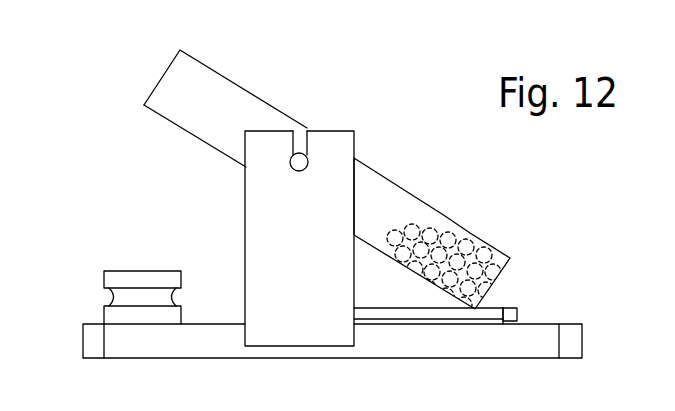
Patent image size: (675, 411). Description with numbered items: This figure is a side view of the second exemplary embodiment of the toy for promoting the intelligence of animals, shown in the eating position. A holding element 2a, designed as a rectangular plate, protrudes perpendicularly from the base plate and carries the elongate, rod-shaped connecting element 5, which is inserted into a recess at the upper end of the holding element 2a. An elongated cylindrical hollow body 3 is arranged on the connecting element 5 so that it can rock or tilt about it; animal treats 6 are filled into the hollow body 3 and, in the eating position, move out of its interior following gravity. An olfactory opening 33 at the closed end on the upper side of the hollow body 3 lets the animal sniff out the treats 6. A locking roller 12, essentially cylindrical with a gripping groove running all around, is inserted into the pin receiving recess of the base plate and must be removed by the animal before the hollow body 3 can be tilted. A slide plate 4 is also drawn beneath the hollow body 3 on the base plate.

The holding element 2a is at (310, 327).
The hollow body 3 is at (185, 95).
The slide plate 4 is at (493, 315).
The connecting element 5 is at (291, 160).
The animal treats 6 is at (470, 233).
The locking roller 12 is at (133, 279).
The olfactory opening 33 is at (458, 210).